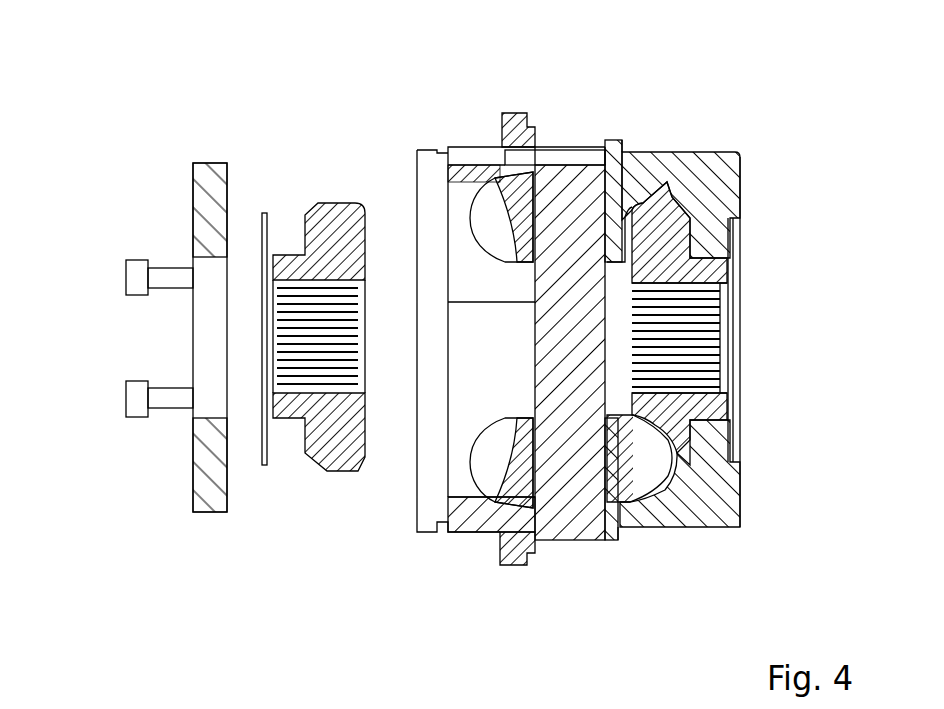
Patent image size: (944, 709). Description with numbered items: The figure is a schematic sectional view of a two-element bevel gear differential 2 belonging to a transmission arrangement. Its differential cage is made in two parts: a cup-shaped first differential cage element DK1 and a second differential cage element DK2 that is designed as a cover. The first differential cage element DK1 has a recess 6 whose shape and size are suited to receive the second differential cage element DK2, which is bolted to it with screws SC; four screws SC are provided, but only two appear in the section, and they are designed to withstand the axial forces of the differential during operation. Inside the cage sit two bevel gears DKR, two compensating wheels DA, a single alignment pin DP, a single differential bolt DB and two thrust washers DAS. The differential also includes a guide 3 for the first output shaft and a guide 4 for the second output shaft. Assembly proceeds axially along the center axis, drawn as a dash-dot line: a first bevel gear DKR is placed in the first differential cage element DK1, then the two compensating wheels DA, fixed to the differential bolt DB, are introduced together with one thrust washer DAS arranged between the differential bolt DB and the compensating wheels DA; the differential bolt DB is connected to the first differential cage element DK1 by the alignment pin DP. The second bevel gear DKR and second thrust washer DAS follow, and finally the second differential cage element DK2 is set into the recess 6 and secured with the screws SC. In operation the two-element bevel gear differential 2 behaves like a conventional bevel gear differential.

The two-element bevel gear differential 2 is at (362, 100).
The guide 3 is at (607, 337).
The guide 4 is at (497, 330).
The recess 6 is at (433, 197).
The first differential cage element DK1 is at (503, 112).
The second differential cage element DK2 is at (197, 181).
The bevel gear DKR is at (333, 253).
The thrust washer DAS is at (265, 213).
The alignment pin DP is at (577, 160).
The compensating wheel DA is at (633, 182).
The differential bolt DB is at (567, 473).
The screw SC is at (172, 278).